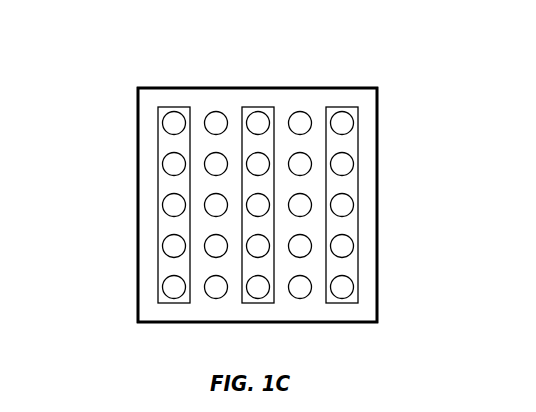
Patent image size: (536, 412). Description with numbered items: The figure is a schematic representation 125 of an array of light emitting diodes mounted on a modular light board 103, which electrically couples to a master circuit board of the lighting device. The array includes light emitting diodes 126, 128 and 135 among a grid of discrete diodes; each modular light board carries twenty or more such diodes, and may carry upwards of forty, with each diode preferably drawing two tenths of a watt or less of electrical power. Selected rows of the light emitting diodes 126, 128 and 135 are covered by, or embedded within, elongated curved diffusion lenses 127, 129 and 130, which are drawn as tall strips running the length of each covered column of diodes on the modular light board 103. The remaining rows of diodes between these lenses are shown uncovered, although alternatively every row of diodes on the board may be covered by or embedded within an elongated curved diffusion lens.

The schematic representation 125 is at (111, 63).
The modular light board 103 is at (377, 182).
The light emitting diode 126 is at (177, 109).
The elongated curved diffusion lens 127 is at (158, 190).
The light emitting diode 128 is at (260, 110).
The elongated curved diffusion lens 129 is at (257, 303).
The elongated curved diffusion lens 130 is at (358, 223).
The light emitting diode 135 is at (338, 110).